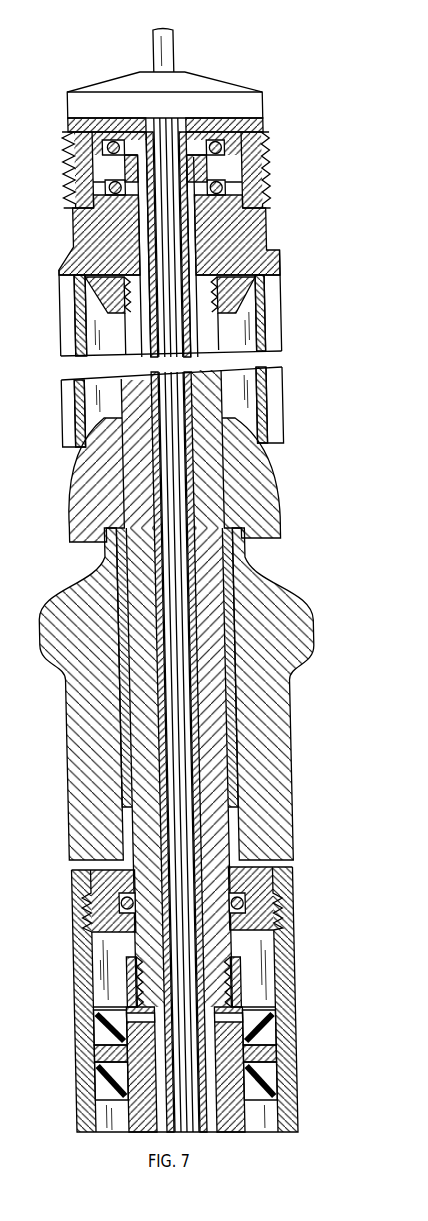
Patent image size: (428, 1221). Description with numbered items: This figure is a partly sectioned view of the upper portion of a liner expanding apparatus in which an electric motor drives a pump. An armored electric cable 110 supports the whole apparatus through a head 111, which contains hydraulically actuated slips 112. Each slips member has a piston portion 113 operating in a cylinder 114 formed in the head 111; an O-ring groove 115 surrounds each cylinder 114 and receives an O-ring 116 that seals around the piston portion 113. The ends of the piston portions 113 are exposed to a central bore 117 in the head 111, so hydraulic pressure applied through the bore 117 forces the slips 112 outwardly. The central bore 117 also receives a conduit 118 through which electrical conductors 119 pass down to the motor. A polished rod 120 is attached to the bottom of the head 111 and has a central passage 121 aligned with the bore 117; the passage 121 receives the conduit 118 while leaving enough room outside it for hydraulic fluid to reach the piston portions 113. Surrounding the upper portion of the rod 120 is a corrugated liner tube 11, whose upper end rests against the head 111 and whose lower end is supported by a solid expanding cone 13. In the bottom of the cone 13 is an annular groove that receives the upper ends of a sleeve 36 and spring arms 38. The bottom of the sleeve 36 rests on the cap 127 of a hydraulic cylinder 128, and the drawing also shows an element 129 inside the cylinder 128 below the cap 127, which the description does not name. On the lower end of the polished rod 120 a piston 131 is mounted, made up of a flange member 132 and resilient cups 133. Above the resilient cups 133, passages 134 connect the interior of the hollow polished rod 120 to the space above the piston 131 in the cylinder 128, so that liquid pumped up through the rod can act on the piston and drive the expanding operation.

The armored electric cable 110 is at (173, 43).
The head 111 is at (233, 83).
The hydraulically actuated slips 112 is at (270, 157).
The piston portion 113 is at (240, 185).
The cylinder 114 is at (215, 195).
The O-ring groove 115 is at (103, 150).
The O-ring 116 is at (105, 187).
The central bore 117 is at (198, 235).
The conduit 118 is at (192, 263).
The electrical conductors 119 is at (185, 270).
The polished rod 120 is at (218, 323).
The central passage 121 is at (207, 343).
The corrugated liner tube 11 is at (282, 413).
The solid expanding cone 13 is at (273, 475).
The sleeve 36 is at (240, 557).
The spring arms 38 is at (311, 623).
The cap 127 is at (293, 880).
The hydraulic cylinder 128 is at (295, 965).
The chamber 129 is at (245, 939).
The piston 131 is at (280, 1029).
The flange member 132 is at (278, 1052).
The resilient cups 133 is at (278, 1085).
The passages 134 is at (240, 1013).